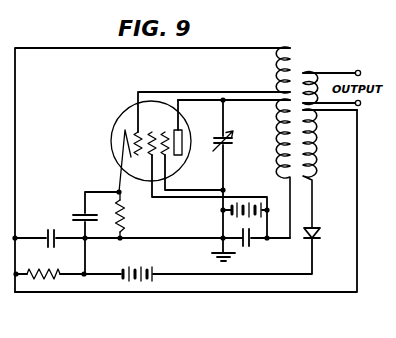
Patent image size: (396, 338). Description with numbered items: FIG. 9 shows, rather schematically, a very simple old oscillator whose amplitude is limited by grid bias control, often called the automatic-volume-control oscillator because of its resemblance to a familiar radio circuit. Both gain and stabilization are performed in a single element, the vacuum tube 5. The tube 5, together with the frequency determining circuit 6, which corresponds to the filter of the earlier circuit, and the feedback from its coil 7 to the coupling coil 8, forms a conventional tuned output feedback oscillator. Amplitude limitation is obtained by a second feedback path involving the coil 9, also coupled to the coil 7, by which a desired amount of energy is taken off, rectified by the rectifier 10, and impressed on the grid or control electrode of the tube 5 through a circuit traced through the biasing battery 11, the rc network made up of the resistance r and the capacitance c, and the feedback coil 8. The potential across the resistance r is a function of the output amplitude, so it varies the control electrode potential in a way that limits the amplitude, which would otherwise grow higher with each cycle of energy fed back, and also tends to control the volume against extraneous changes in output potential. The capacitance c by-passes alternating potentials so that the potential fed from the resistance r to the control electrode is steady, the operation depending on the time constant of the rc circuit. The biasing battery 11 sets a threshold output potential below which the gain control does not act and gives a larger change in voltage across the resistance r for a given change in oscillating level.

The vacuum tube 5 is at (151, 131).
The frequency determining circuit 6 is at (245, 195).
The coil 7 is at (280, 153).
The coupling coil 8 is at (298, 60).
The coil 9 is at (318, 154).
The rectifier 10 is at (321, 234).
The biasing battery 11 is at (138, 283).
The capacitance c is at (50, 228).
The resistance r is at (38, 266).